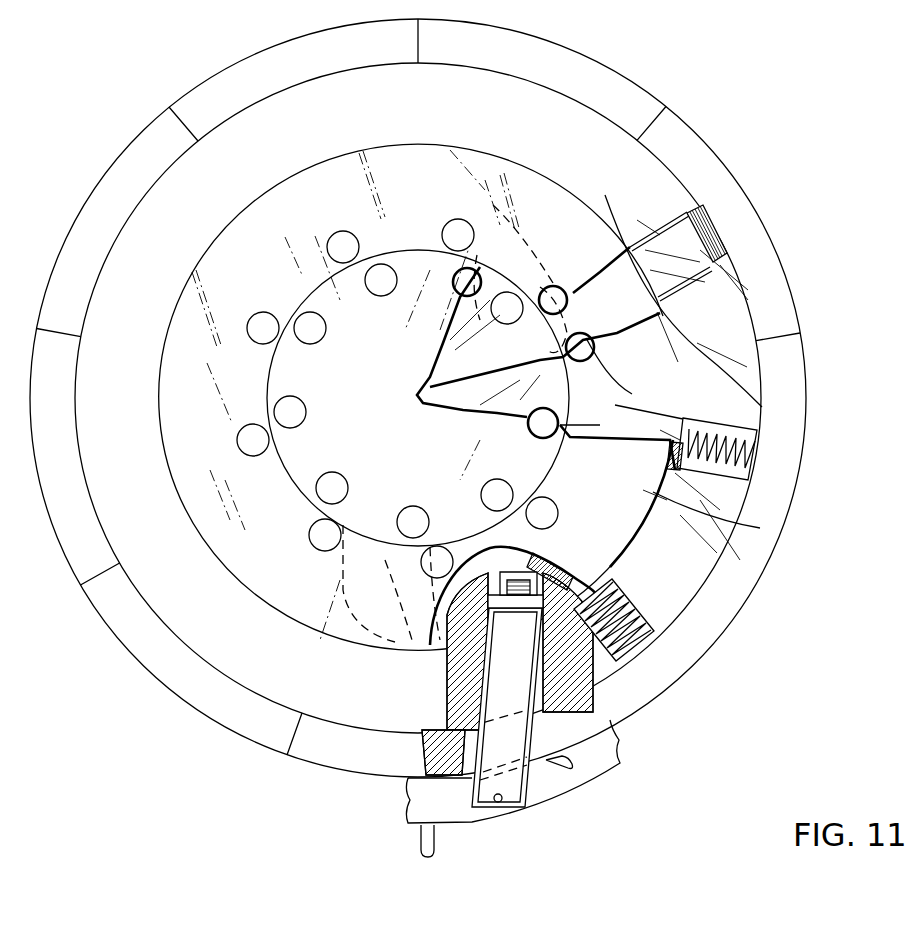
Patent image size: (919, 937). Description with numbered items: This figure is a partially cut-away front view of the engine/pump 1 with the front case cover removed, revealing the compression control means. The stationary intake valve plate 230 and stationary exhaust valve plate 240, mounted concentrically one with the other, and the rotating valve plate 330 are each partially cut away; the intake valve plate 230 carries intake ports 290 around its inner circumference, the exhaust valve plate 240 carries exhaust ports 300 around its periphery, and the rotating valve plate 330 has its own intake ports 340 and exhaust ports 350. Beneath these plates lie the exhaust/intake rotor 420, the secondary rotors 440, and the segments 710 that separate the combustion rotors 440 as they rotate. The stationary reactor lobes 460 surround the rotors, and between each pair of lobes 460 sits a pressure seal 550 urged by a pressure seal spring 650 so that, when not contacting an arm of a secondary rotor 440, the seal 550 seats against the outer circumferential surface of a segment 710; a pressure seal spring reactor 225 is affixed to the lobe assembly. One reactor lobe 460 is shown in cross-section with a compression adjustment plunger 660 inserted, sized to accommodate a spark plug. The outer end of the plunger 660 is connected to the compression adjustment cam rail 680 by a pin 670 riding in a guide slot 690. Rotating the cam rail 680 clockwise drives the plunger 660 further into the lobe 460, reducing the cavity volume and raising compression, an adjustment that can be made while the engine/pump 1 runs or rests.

The engine/pump 1 is at (122, 140).
The pressure seal spring reactor 225 is at (688, 148).
The stationary intake valve plate 230 is at (783, 528).
The stationary exhaust valve plate 240 is at (361, 521).
The intake ports 290 is at (260, 457).
The exhaust ports 300 is at (292, 398).
The rotating valve plate 330 is at (717, 368).
The intake ports 340 is at (580, 283).
The exhaust ports 350 is at (493, 312).
The exhaust/intake rotor 420 is at (428, 408).
The secondary rotors 440 is at (440, 653).
The reactor lobes 460 is at (727, 323).
The pressure seal 550 is at (720, 240).
The pressure seal spring 650 is at (707, 222).
The compression adjustment plunger 660 is at (483, 790).
The pin 670 is at (507, 802).
The compression adjustment cam rail 680 is at (607, 770).
The guide slot 690 is at (575, 768).
The segments 710 is at (623, 392).